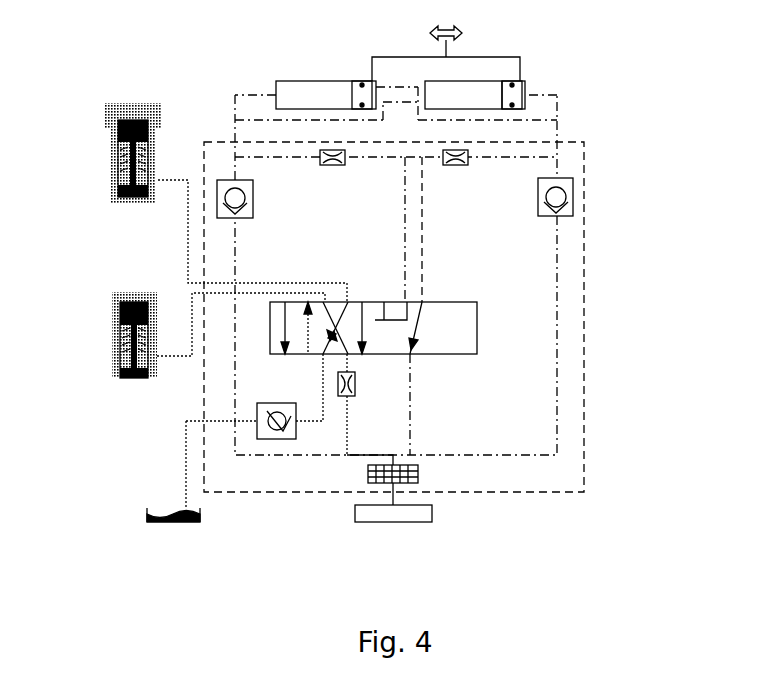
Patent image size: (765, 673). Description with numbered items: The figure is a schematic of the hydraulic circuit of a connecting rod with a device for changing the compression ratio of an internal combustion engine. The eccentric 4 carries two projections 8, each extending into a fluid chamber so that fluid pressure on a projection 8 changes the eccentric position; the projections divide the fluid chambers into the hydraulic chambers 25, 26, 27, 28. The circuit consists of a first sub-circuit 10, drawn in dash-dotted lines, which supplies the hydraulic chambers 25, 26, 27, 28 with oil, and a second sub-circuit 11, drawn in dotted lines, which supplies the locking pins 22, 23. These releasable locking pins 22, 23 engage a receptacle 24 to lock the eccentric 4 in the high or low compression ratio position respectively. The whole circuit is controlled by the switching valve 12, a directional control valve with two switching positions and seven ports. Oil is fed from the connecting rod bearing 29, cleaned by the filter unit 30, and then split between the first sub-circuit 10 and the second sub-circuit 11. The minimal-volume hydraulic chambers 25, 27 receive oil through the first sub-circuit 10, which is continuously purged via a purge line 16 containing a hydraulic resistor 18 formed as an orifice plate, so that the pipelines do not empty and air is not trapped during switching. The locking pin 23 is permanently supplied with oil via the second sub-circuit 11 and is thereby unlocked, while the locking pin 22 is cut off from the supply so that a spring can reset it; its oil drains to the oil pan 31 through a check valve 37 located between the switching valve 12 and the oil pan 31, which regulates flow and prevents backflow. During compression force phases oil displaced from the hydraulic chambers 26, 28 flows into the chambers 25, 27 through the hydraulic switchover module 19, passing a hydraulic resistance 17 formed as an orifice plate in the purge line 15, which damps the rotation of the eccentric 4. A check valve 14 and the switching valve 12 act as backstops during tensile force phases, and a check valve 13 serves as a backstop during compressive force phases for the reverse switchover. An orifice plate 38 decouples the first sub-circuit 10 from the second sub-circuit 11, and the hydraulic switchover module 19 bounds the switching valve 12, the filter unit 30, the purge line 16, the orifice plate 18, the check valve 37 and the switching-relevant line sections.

The eccentric 4 is at (108, 117).
The projection 8 is at (363, 95).
The first sub-circuit 10 is at (557, 340).
The second sub-circuit 11 is at (191, 358).
The switching valve 12 is at (477, 327).
The check valve 13 is at (253, 198).
The check valve 14 is at (573, 197).
The purge line 15 is at (278, 155).
The purge line 16 is at (540, 155).
The hydraulic resistance 17 is at (333, 167).
The hydraulic resistor 18 is at (455, 165).
The hydraulic switchover module 19 is at (584, 403).
The locking pin 22 is at (110, 175).
The locking pin 23 is at (112, 336).
The receptacle 24 is at (122, 117).
The hydraulic chamber 25 is at (372, 90).
The hydraulic chamber 26 is at (452, 95).
The hydraulic chamber 27 is at (515, 97).
The hydraulic chamber 28 is at (297, 90).
The connecting rod bearing 29 is at (432, 512).
The filter unit 30 is at (418, 473).
The oil pan 31 is at (147, 516).
The check valve 37 is at (277, 439).
The orifice plate 38 is at (355, 382).